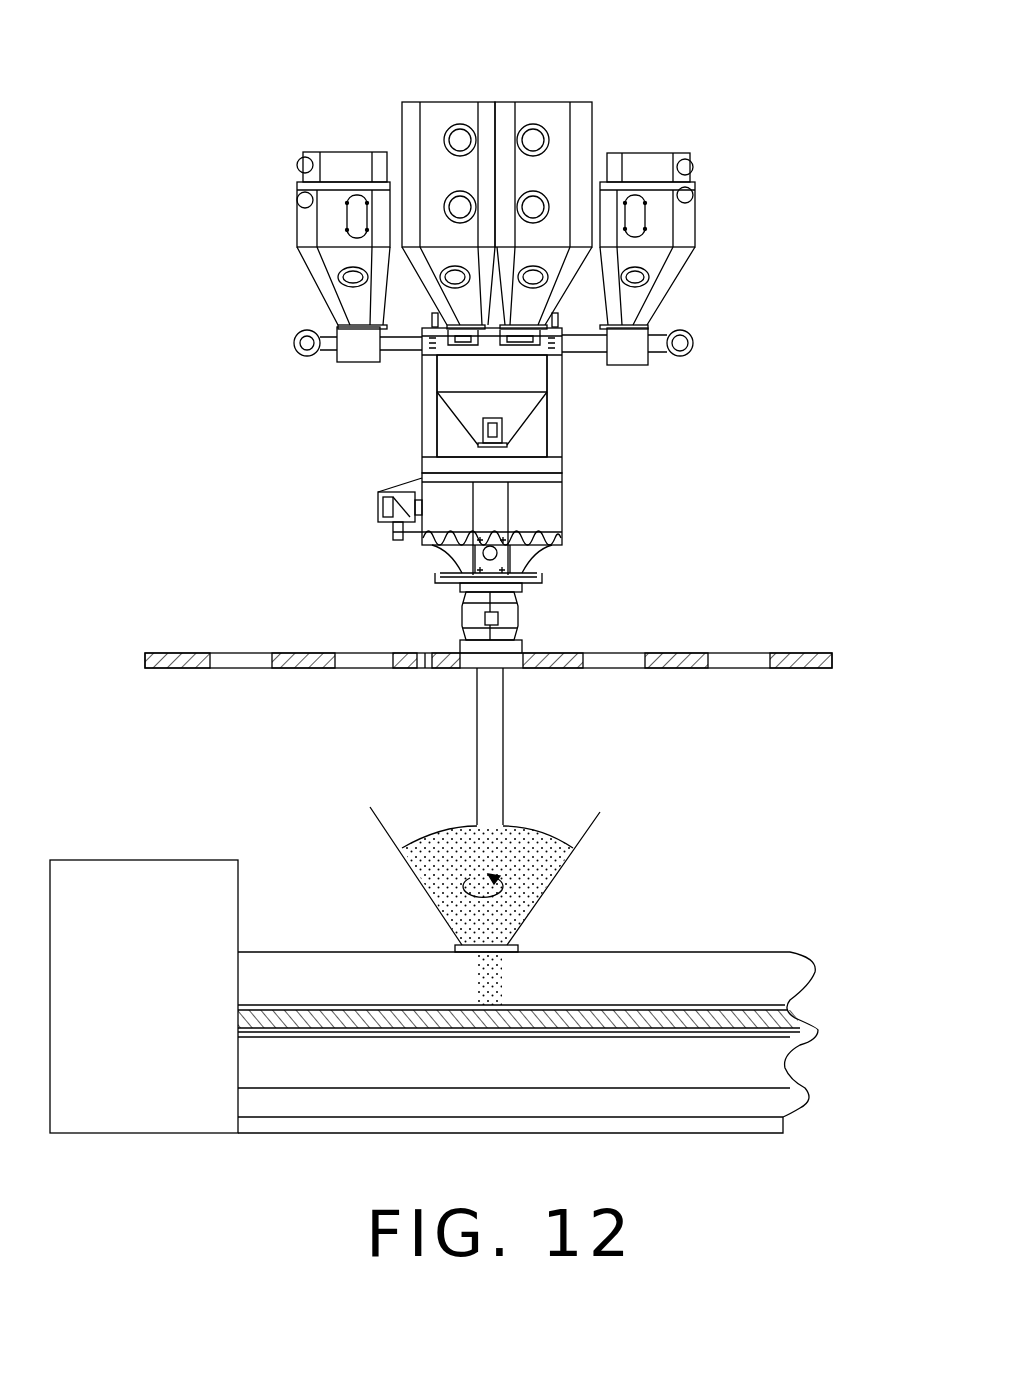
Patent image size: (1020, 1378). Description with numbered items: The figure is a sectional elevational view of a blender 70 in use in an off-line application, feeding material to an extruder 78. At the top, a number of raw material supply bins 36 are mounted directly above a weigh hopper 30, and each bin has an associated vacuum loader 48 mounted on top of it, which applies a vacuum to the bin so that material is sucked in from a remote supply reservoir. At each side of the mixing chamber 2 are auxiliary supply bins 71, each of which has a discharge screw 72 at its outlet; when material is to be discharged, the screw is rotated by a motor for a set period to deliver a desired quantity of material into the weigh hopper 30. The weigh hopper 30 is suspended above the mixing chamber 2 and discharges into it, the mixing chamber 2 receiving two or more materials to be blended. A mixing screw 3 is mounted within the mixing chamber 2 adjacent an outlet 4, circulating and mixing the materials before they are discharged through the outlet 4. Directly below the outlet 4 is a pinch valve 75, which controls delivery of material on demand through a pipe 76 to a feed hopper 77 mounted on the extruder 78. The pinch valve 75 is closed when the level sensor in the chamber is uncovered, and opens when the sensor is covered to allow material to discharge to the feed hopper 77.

The blender 70 is at (770, 128).
The raw material supply bin 36 is at (440, 112).
The vacuum loader 48 is at (333, 158).
The auxiliary supply bin 71 is at (325, 222).
The discharge screw 72 is at (397, 347).
The mixing chamber 2 is at (563, 431).
The weigh hopper 30 is at (467, 407).
The mixing screw 3 is at (517, 530).
The outlet 4 is at (503, 555).
The pinch valve 75 is at (520, 612).
The pipe 76 is at (504, 740).
The feed hopper 77 is at (580, 842).
The extruder 78 is at (650, 963).